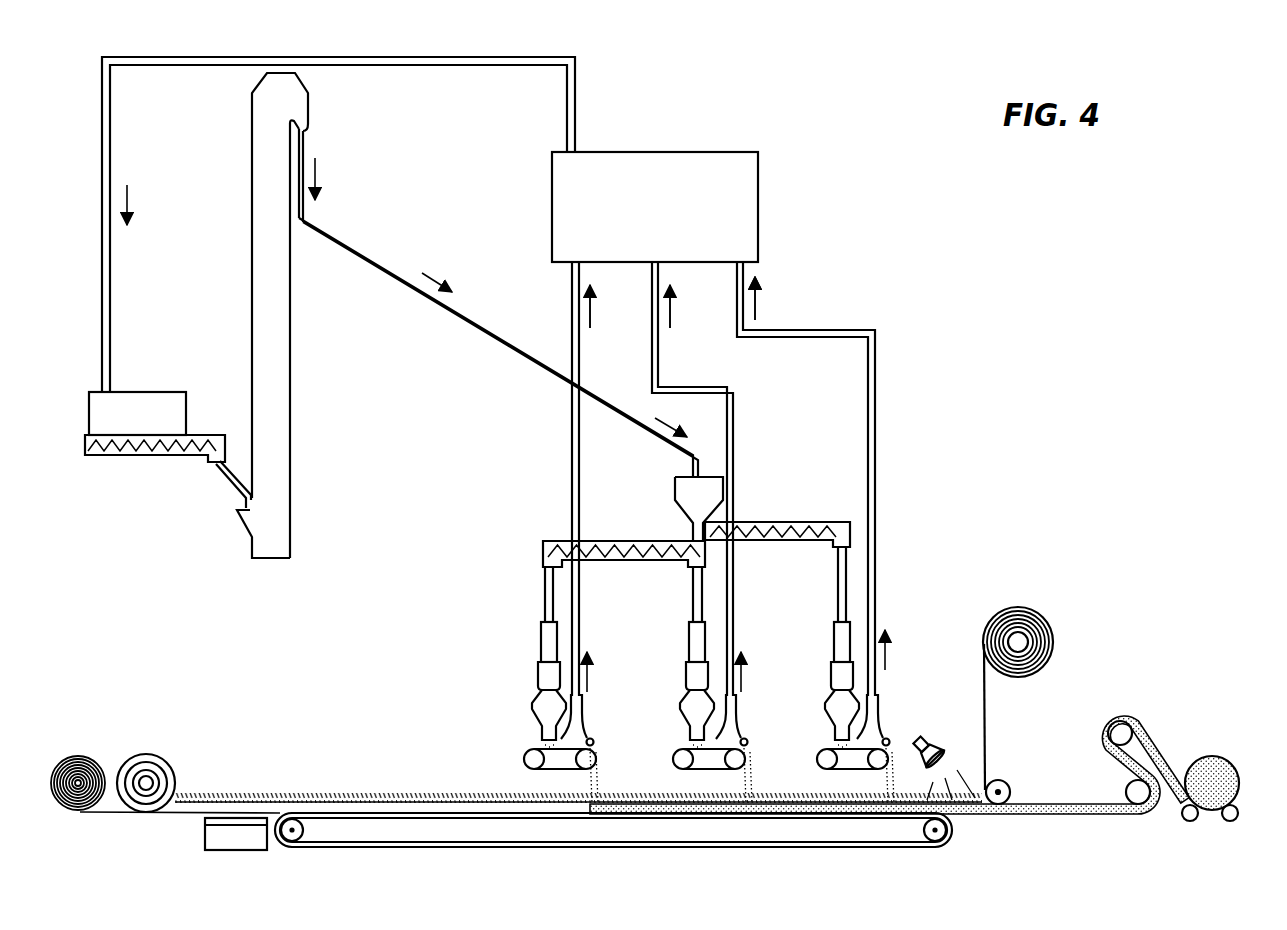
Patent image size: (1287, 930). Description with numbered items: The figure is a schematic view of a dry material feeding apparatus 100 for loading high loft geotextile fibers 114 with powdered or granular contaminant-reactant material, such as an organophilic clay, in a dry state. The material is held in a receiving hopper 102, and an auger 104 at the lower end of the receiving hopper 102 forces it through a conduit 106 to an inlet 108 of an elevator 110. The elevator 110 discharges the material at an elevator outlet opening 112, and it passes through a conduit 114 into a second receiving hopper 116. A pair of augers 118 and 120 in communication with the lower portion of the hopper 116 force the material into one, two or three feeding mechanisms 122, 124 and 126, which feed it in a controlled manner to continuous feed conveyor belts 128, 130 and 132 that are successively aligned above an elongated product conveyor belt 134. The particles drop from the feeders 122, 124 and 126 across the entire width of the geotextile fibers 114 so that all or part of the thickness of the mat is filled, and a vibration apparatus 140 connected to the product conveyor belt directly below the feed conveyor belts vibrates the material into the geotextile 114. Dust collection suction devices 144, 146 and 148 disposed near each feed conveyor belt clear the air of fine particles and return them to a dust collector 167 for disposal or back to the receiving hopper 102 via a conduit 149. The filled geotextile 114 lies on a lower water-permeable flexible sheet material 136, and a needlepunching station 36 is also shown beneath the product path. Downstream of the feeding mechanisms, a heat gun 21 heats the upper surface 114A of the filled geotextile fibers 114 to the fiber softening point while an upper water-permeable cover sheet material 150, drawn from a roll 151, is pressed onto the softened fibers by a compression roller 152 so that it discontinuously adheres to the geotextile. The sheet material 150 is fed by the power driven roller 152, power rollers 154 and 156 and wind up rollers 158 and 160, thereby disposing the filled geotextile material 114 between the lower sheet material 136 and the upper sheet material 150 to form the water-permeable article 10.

The article 10 is at (1214, 742).
The heat gun 21 is at (932, 744).
The needlepunching station 36 is at (244, 847).
The dry material feeding apparatus 100 is at (492, 240).
The receiving hopper 102 is at (158, 406).
The auger 104 is at (126, 458).
The conduit 106 is at (222, 487).
The inlet 108 is at (254, 505).
The elevator 110 is at (292, 390).
The elevator outlet opening 112 is at (308, 130).
The high loft geotextile fibers 114 is at (388, 263).
The upper surface 114A is at (282, 793).
The receiving hopper 116 is at (716, 488).
The auger 118 is at (622, 541).
The auger 120 is at (818, 521).
The feeding mechanism 122 is at (540, 630).
The feeding mechanism 124 is at (688, 630).
The feeding mechanism 126 is at (833, 630).
The continuous feed conveyor belt 128 is at (540, 769).
The continuous feed conveyor belt 130 is at (690, 769).
The continuous feed conveyor belt 132 is at (825, 769).
The elongated product conveyor belt 134 is at (356, 849).
The lower water-permeable flexible sheet material 136 is at (120, 815).
The vibration apparatus 140 is at (765, 849).
The dust collection suction device 144 is at (580, 720).
The dust collection suction device 146 is at (735, 720).
The dust collection suction device 148 is at (876, 720).
The conduit 149 is at (460, 55).
The upper water-permeable sheet material 150 is at (986, 722).
The roll 151 is at (1048, 632).
The compression roller 152 is at (1006, 782).
The power roller 154 is at (1128, 787).
The power roller 156 is at (1117, 731).
The wind up roller 158 is at (1187, 822).
The wind up roller 160 is at (1235, 822).
The dust collector 167 is at (758, 200).